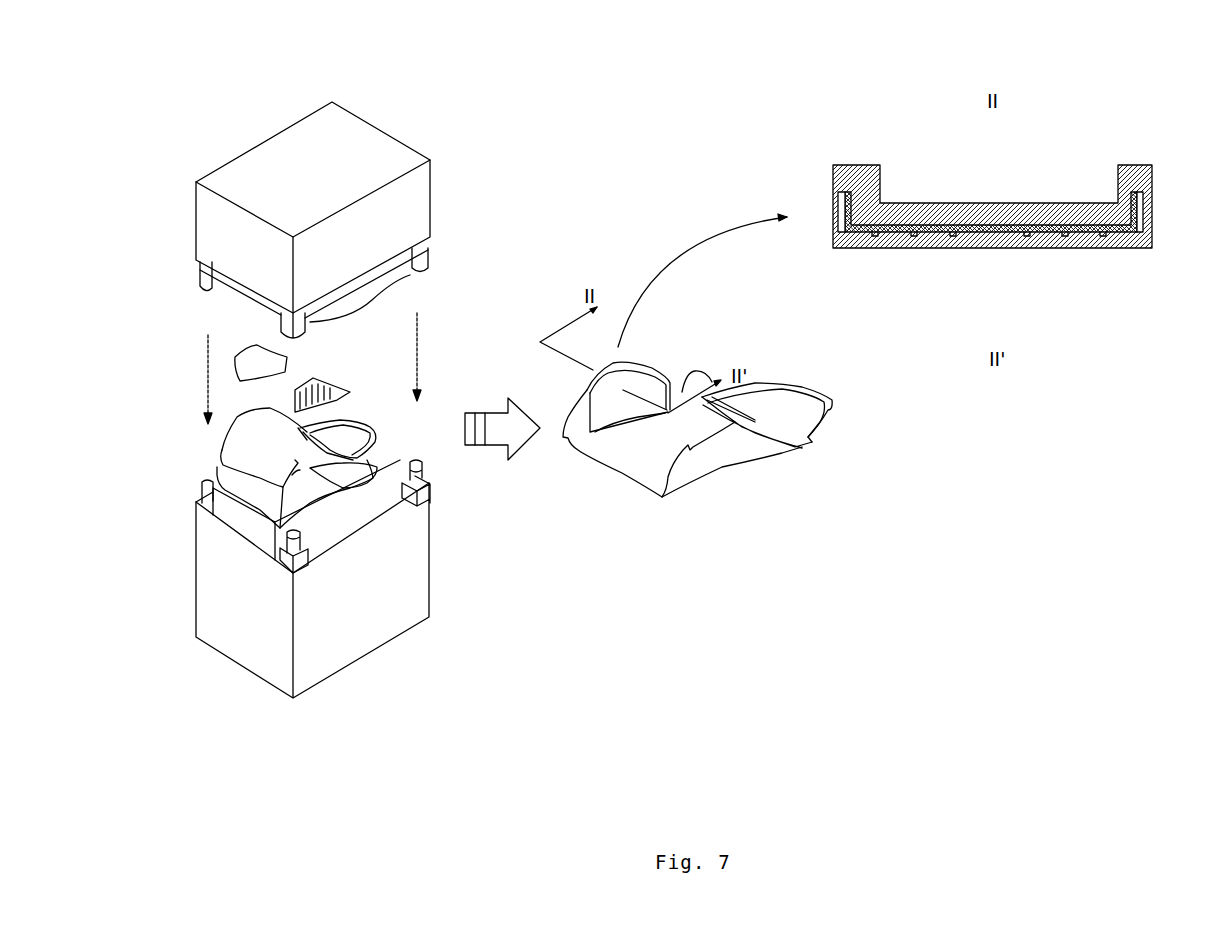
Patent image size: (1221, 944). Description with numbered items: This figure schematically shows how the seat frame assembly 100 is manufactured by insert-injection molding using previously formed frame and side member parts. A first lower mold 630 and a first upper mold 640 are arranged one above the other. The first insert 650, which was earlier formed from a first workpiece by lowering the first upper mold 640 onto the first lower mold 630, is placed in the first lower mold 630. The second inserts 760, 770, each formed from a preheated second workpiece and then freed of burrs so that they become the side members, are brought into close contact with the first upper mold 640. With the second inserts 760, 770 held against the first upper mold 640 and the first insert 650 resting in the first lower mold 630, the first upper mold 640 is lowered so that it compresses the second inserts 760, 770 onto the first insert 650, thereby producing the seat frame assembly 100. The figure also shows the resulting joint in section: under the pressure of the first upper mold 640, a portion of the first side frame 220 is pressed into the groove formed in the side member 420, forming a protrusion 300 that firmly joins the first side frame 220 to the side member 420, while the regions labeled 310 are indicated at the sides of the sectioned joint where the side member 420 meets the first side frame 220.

The first upper mold 640 is at (343, 147).
The first lower mold 630 is at (362, 593).
The first insert 650 is at (260, 450).
The second insert 760 is at (255, 340).
The second insert 770 is at (317, 380).
The seat frame assembly 100 is at (728, 457).
The side member 420 is at (683, 388).
The first side frame 220 is at (865, 173).
The slot 310 is at (838, 197).
The protrusion 300 is at (1103, 237).